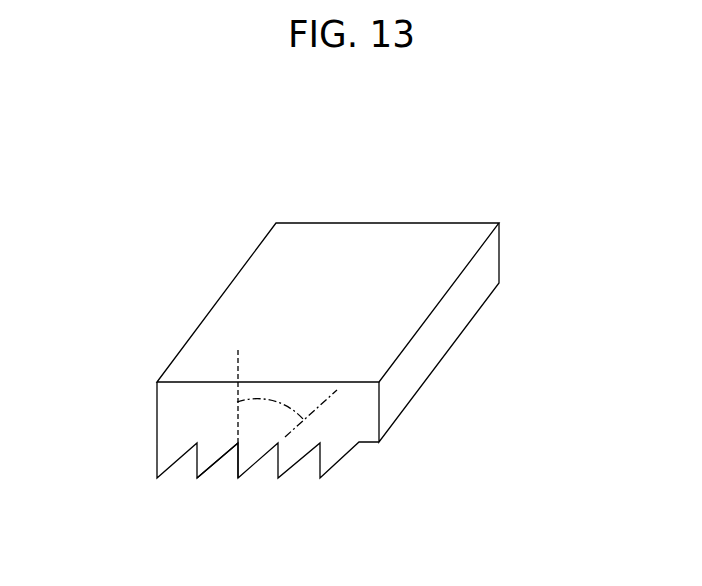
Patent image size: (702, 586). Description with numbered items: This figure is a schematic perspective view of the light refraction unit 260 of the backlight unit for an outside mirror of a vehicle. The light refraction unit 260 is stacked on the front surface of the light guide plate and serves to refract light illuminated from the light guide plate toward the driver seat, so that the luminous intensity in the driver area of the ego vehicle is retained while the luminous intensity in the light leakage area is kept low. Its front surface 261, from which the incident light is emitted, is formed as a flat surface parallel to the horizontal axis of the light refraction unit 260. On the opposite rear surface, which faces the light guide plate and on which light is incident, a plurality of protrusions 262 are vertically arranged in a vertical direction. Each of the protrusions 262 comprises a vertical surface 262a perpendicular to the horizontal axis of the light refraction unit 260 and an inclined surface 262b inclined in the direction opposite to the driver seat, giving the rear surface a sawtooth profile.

The light refraction unit 260 is at (314, 344).
The front surface 261 is at (253, 297).
The protrusions 262 is at (302, 454).
The vertical surface 262a is at (236, 466).
The inclined surface 262b is at (257, 467).